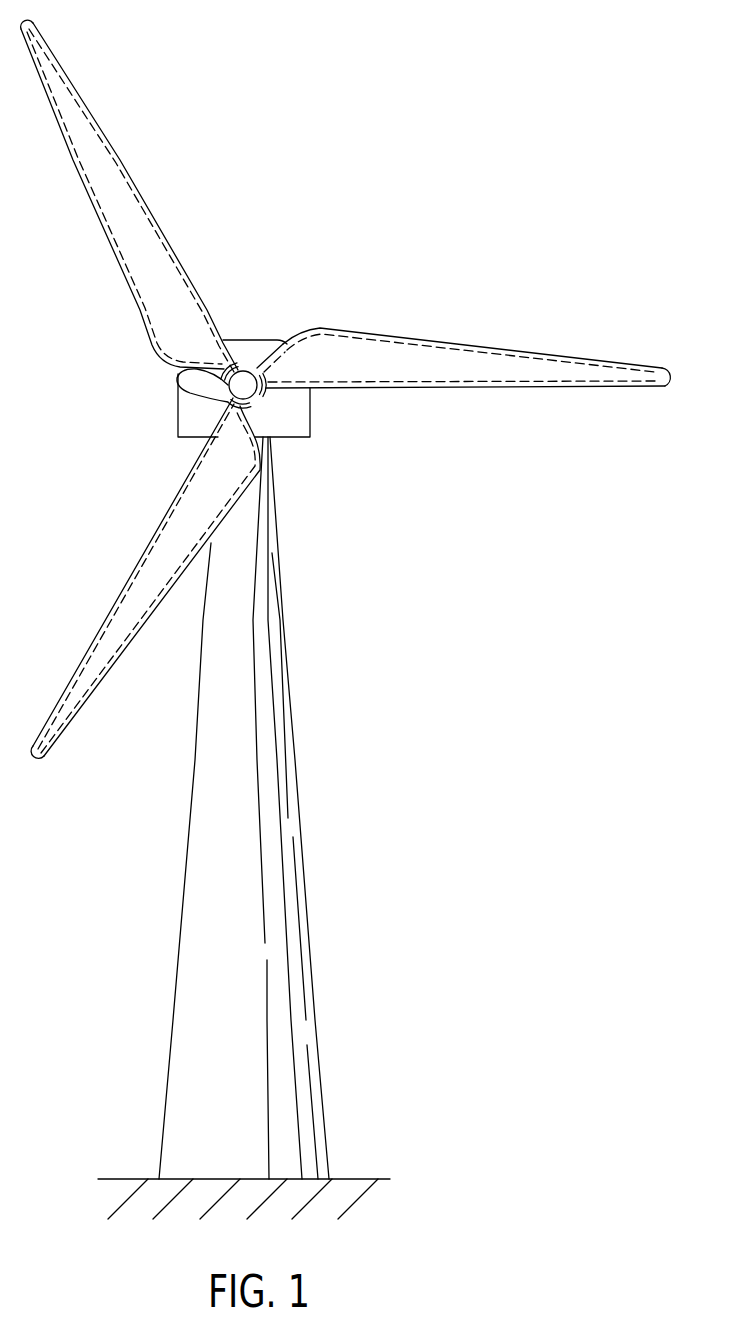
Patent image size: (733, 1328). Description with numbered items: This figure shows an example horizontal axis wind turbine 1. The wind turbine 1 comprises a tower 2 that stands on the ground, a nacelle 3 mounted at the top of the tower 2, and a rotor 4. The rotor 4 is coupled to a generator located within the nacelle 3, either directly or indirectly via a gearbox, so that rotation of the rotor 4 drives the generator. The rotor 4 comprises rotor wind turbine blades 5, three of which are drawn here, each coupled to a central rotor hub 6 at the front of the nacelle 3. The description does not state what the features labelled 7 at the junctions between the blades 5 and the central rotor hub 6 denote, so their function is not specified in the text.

The wind turbine 1 is at (440, 921).
The tower 2 is at (293, 818).
The nacelle 3 is at (303, 417).
The rotor 4 is at (361, 172).
The rotor wind turbine blade 5 is at (77, 153).
The central rotor hub 6 is at (243, 380).
The pitch bearing 7 is at (231, 370).